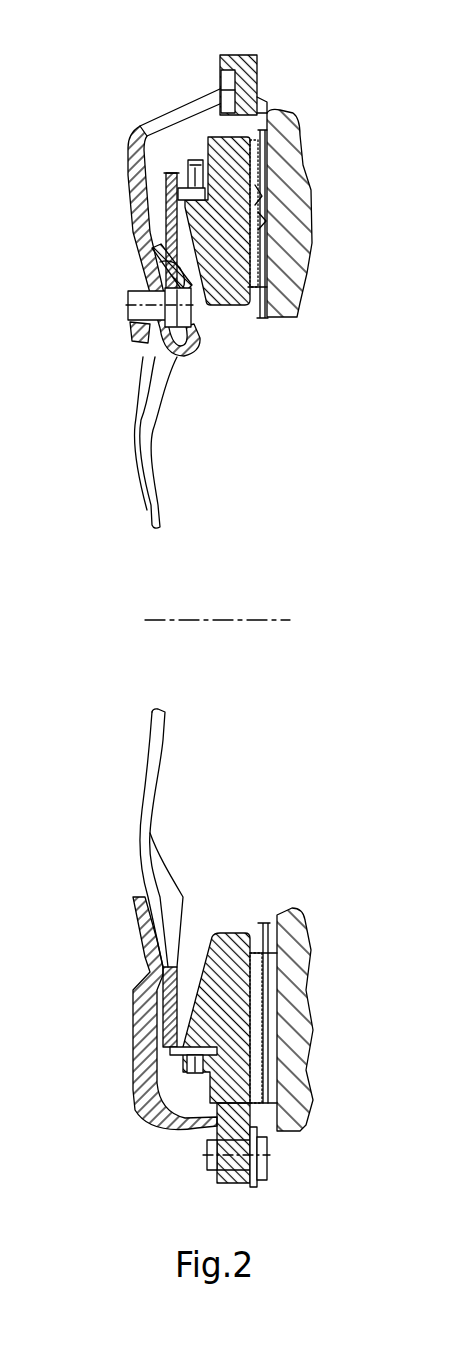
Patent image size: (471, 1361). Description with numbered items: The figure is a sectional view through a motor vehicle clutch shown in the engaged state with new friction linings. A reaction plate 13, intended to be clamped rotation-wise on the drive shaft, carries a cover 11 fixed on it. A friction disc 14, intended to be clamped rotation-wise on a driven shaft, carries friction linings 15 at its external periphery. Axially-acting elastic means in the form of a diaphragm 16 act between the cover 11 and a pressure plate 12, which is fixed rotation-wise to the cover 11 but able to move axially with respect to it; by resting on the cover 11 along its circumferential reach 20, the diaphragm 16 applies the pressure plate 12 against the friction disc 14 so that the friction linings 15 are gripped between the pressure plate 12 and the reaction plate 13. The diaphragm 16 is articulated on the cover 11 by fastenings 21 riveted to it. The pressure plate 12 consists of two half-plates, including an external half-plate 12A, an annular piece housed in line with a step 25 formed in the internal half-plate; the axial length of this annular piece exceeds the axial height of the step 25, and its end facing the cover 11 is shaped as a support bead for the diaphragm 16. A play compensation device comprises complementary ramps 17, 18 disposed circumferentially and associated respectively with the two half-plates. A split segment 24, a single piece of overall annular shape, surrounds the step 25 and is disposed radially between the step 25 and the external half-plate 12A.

The cover 11 is at (126, 145).
The pressure plate 12 is at (228, 311).
The external half-plate 12A is at (194, 162).
The reaction plate 13 is at (300, 149).
The friction disc 14 is at (267, 317).
The friction linings 15 is at (272, 115).
The diaphragm 16 is at (153, 443).
The ramp 17 is at (262, 196).
The ramp 18 is at (266, 221).
The circumferential reach 20 is at (147, 272).
The fastenings 21 is at (131, 302).
The split segment 24 is at (205, 1045).
The step 25 is at (175, 186).